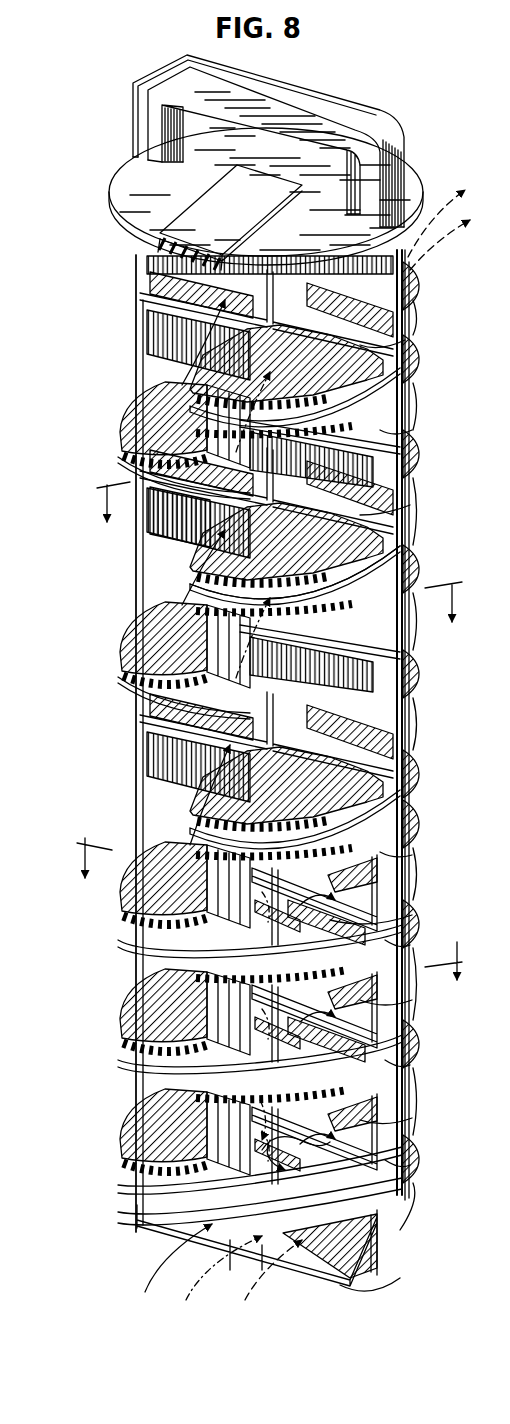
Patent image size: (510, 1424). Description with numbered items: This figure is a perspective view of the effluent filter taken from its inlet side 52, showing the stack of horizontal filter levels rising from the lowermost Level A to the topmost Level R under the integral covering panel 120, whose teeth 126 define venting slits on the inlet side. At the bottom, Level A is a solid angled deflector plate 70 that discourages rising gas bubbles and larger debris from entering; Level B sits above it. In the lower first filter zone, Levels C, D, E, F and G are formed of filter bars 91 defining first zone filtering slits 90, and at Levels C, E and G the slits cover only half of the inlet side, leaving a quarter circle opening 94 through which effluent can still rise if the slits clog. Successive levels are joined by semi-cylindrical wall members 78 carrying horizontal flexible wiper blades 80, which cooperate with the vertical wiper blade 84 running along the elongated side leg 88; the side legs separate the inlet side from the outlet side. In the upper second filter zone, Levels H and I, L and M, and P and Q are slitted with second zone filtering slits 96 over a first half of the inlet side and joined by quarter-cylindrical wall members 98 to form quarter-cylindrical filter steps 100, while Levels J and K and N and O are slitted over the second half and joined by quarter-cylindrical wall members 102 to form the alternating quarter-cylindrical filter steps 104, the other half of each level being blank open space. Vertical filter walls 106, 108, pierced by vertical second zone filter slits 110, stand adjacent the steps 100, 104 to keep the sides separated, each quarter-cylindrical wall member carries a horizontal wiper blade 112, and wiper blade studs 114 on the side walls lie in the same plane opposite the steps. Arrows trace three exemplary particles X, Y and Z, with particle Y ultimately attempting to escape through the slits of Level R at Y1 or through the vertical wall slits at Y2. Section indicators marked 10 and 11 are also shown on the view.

The integral covering panel 120 is at (152, 178).
The teeth 126 is at (165, 222).
The inlet side 52 is at (126, 362).
The Level O is at (150, 378).
The quarter-cylindrical filter steps 104 is at (135, 432).
The vertical filter wall 106 is at (175, 485).
The quarter-cylindrical filter steps 100 is at (360, 562).
The Level K is at (160, 605).
The quarter-cylindrical wall member 102 is at (135, 652).
The wiper blade 112 is at (130, 698).
The vertical second zone filter slits 110 is at (372, 688).
The horizontal wiper blade studs 114 is at (375, 738).
The first zone filtering slits 90 is at (165, 945).
The filter bars 91 is at (150, 1012).
The wiper blade 80 is at (140, 1175).
The semi-cylindrical wall member 78 is at (160, 1197).
The angled deflector plate 70 is at (152, 1225).
The vertical filter wall 108 is at (400, 432).
The vertical wiper blade 84 is at (405, 748).
The elongated side leg 88 is at (412, 803).
The second zone filtering slits 96 is at (405, 822).
The quarter-cylindrical wall member 98 is at (400, 882).
The quarter circle opening 94 is at (410, 945).
The Level R is at (418, 290).
The Level Q is at (400, 342).
The Level P is at (418, 377).
The Level N is at (418, 463).
The Level M is at (410, 505).
The Level L is at (418, 553).
The Level J is at (412, 690).
The Level I is at (400, 770).
The Level H is at (410, 862).
The Level G is at (412, 903).
The Level F is at (400, 922).
The Level E is at (395, 1005).
The Level D is at (395, 1072).
The Level C is at (398, 1120).
The Level B is at (402, 1176).
The Level A is at (365, 1290).
The particle X is at (172, 1271).
The particle Y is at (220, 1280).
The particle Z is at (267, 1284).
The particle Y exit path through Level R slits Y1 is at (454, 235).
The particle Y exit path through vertical wall slits Y2 is at (448, 210).
The section line 10- 10 is at (278, 928).
The section line 11- 11 is at (282, 545).